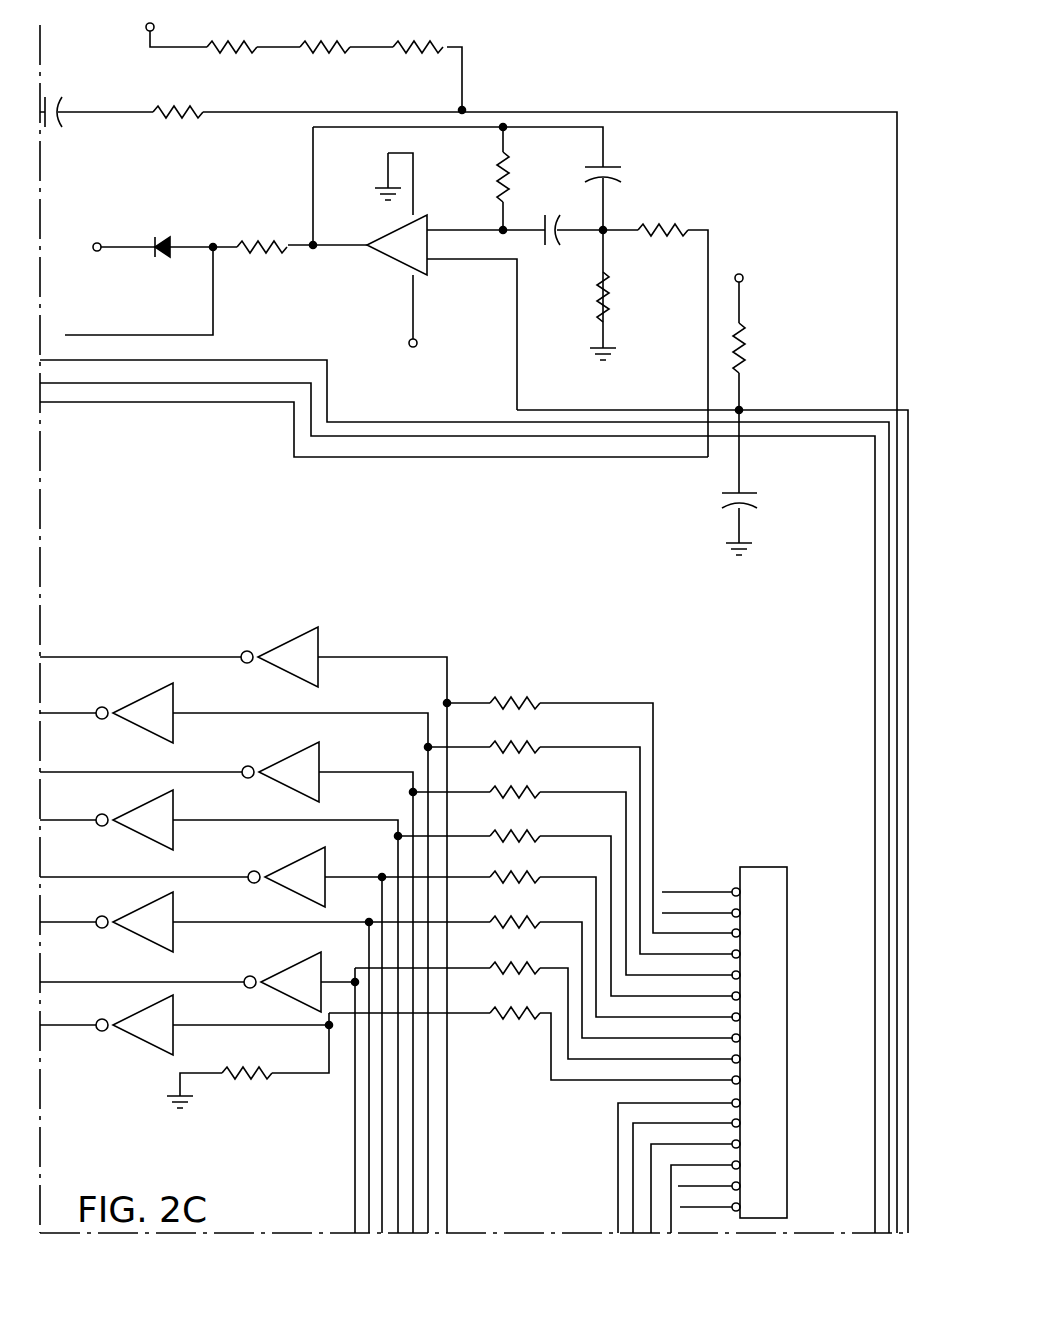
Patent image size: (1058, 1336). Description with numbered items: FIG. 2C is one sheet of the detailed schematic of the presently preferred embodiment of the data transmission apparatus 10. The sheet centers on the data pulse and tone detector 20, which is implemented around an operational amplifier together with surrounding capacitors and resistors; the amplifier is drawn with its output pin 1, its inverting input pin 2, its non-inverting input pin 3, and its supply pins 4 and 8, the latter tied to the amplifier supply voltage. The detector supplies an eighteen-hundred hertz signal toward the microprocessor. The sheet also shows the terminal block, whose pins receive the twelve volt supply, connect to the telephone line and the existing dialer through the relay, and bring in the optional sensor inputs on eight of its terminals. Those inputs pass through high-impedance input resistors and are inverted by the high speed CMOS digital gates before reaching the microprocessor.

The data transmission apparatus 10 is at (531, 88).
The data pulse and tone detector 20 is at (375, 315).
The op-amp output pin 1 is at (327, 233).
The op-amp inverting input pin 2 is at (465, 218).
The op-amp non-inverting input pin 3 is at (472, 324).
The op-amp negative supply pin 4 is at (403, 184).
The op-amp positive supply pin 8 is at (420, 311).